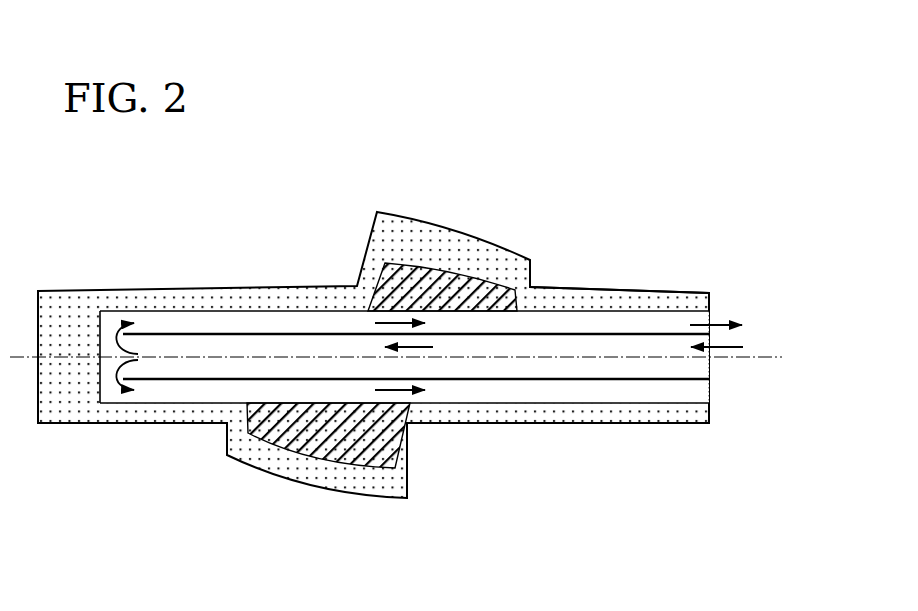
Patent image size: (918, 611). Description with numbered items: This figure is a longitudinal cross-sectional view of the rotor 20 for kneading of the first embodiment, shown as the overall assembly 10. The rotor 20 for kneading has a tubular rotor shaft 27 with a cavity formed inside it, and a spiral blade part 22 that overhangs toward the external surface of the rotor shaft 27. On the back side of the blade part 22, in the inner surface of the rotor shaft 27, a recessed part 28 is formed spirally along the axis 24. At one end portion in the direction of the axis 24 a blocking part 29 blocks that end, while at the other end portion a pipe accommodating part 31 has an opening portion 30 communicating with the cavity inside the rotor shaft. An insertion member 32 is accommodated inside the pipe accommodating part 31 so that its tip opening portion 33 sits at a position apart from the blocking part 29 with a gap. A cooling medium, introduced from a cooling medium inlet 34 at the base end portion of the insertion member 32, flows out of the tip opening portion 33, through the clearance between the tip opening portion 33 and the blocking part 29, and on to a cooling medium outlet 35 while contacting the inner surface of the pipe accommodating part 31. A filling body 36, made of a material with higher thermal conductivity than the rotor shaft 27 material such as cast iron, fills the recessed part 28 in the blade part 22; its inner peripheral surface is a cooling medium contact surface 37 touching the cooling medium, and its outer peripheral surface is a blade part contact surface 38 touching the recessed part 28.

The valve device 10 is at (396, 337).
The rotor for kneading 20 is at (382, 338).
The blade part 22 is at (418, 228).
The axis 24 is at (23, 357).
The rotor shaft 27 is at (687, 292).
The recessed part 28 is at (472, 272).
The blocking part 29 is at (108, 365).
The opening portion 30 is at (703, 415).
The pipe accommodating part 31 is at (672, 402).
The insertion member 32 is at (577, 380).
The tip opening portion 33 is at (123, 378).
The cooling medium inlet 34 is at (688, 381).
The cooling medium outlet 35 is at (710, 320).
The filling body 36 is at (502, 293).
The cooling medium contact surface 37 is at (500, 311).
The blade part contact surface 38 is at (422, 262).